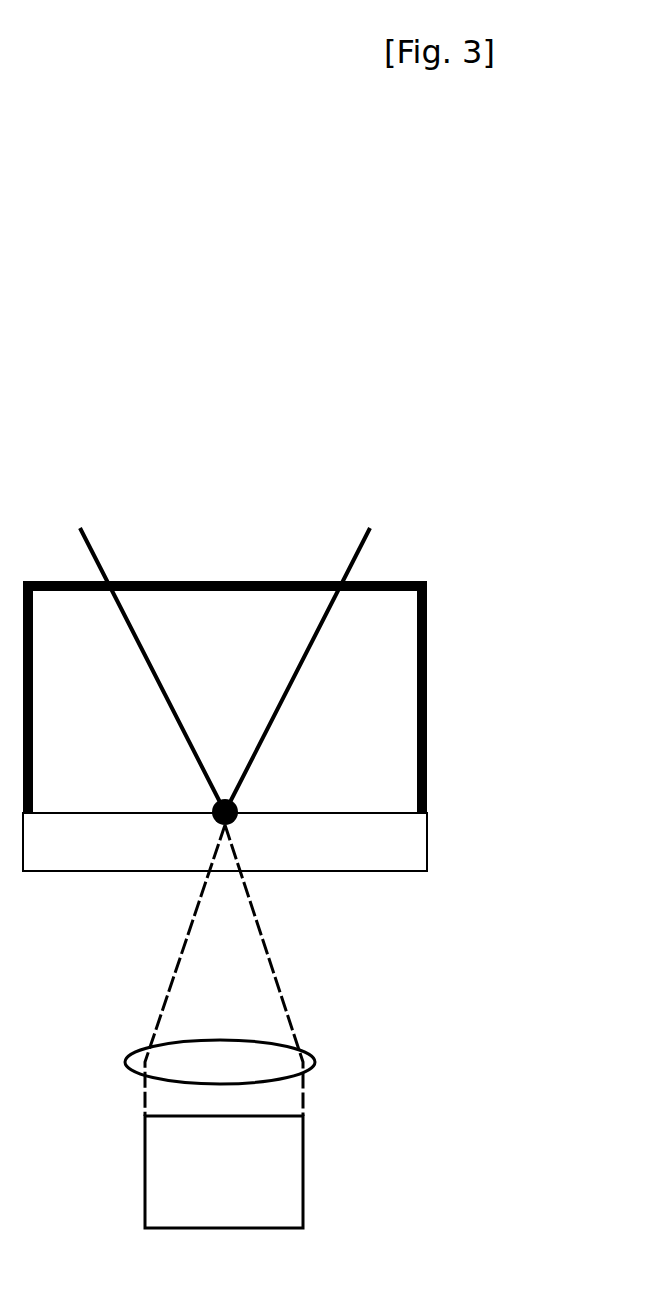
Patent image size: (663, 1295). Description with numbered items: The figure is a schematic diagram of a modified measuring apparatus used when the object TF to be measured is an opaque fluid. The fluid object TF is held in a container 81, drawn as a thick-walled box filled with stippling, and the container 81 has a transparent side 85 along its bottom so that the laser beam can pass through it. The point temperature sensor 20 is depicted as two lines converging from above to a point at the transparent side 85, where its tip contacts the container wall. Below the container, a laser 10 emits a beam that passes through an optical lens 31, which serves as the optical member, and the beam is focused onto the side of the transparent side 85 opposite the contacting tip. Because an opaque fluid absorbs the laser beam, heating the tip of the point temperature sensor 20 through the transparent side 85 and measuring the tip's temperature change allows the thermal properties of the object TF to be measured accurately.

The point temperature sensor 20 is at (370, 533).
The object to be measured (fluid) TF is at (398, 668).
The container 81 is at (428, 730).
The transparent side 85 is at (428, 838).
The optical lens 31 is at (315, 1062).
The laser 10 is at (295, 1178).